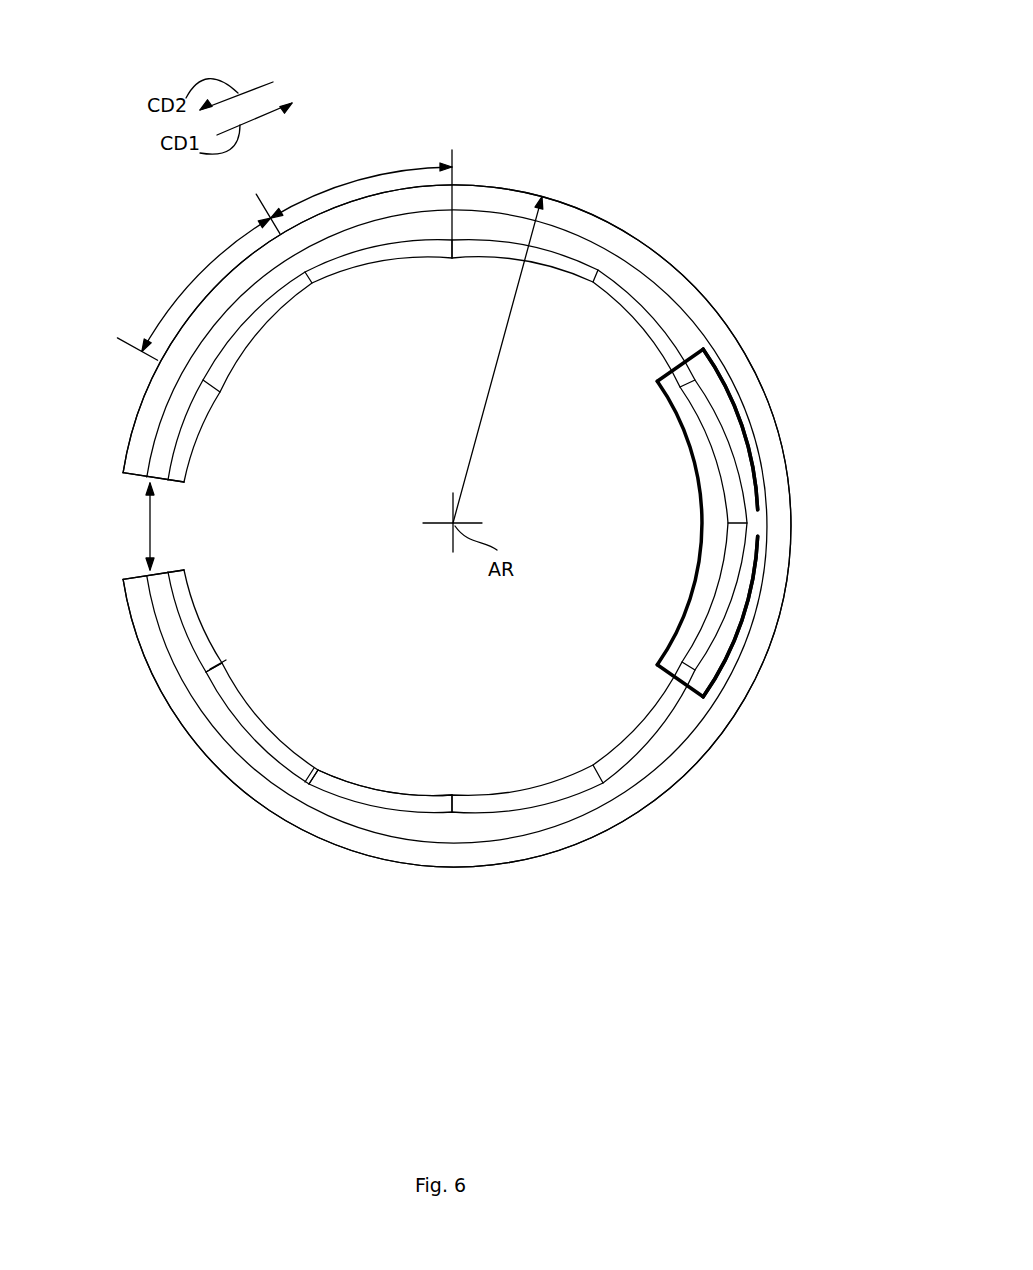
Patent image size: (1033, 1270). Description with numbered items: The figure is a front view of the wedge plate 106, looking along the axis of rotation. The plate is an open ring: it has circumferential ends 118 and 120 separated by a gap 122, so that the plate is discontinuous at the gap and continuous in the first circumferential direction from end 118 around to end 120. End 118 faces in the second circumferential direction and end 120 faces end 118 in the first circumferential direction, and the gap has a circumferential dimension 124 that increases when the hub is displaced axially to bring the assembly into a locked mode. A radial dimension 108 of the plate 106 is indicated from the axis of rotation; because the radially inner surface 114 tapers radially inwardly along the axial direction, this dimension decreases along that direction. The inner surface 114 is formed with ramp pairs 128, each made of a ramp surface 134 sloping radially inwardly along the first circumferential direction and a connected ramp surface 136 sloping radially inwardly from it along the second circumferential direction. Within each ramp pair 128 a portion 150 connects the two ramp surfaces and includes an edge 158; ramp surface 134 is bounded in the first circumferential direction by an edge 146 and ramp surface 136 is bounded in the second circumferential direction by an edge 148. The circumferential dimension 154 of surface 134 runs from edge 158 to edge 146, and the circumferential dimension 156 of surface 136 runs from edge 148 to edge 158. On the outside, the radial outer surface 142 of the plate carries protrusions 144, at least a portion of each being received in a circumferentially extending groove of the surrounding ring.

The wedge plate 106 is at (767, 78).
The radial dimension 108 is at (493, 383).
The radially inner surface 114 is at (418, 792).
The circumferential end 118 is at (130, 478).
The circumferential end 120 is at (130, 572).
The gap 122 is at (180, 523).
The dimension 124 is at (148, 525).
The ramp pair 128 is at (710, 345).
The ramp surface 134 is at (708, 621).
The ramp surface 136 is at (713, 437).
The radial outer surface 142 is at (593, 211).
The protrusion 144 is at (642, 258).
The edge 146 is at (205, 657).
The edge 148 is at (445, 803).
The portion 150 is at (757, 523).
The circumferential dimension 154 is at (361, 178).
The circumferential dimension 156 is at (212, 272).
The edge 158 is at (313, 772).